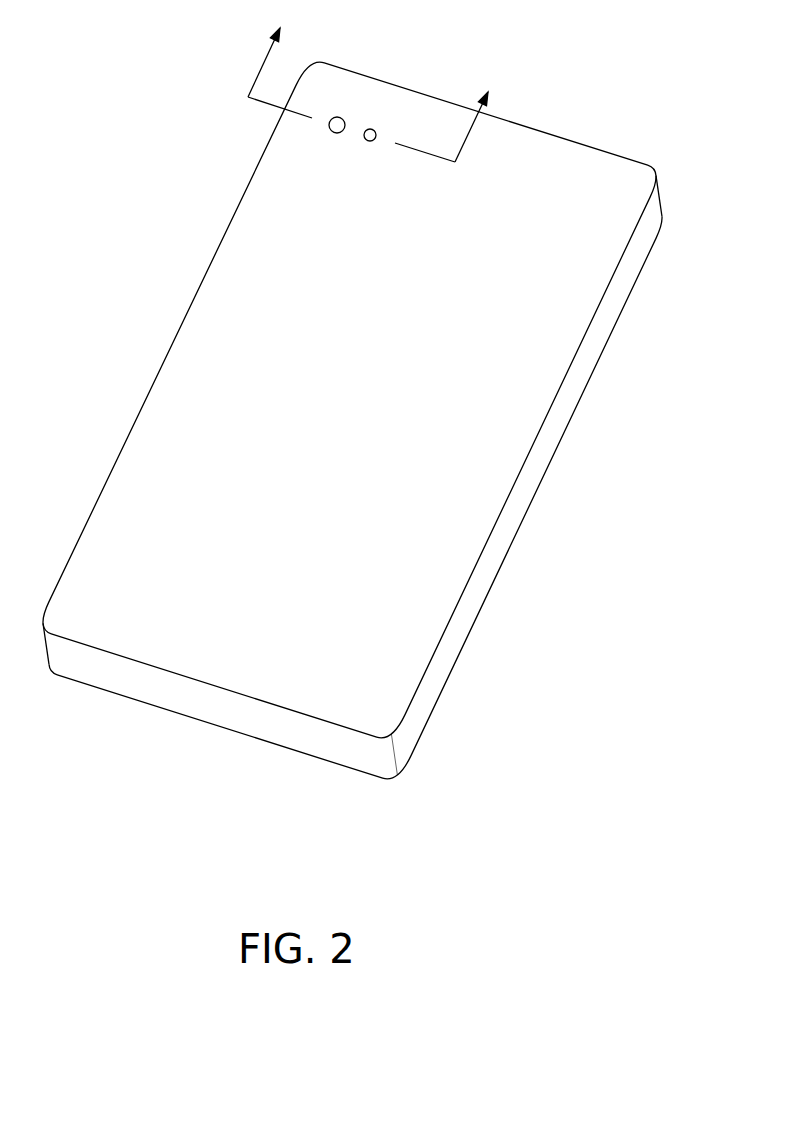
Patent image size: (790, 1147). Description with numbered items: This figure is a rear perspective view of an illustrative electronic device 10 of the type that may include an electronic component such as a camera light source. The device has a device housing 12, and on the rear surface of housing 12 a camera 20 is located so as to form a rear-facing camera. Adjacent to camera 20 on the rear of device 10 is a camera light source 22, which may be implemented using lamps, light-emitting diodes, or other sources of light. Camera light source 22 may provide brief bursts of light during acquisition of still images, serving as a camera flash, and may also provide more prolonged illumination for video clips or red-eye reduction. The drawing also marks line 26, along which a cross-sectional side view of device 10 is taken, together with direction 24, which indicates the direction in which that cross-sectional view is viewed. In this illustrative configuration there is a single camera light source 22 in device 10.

The electronic device 10 is at (364, 403).
The device housing 12 is at (572, 390).
The camera 20 is at (338, 117).
The camera light source 22 is at (375, 129).
The viewing direction 24 is at (259, 72).
The section line 26 is at (298, 113).